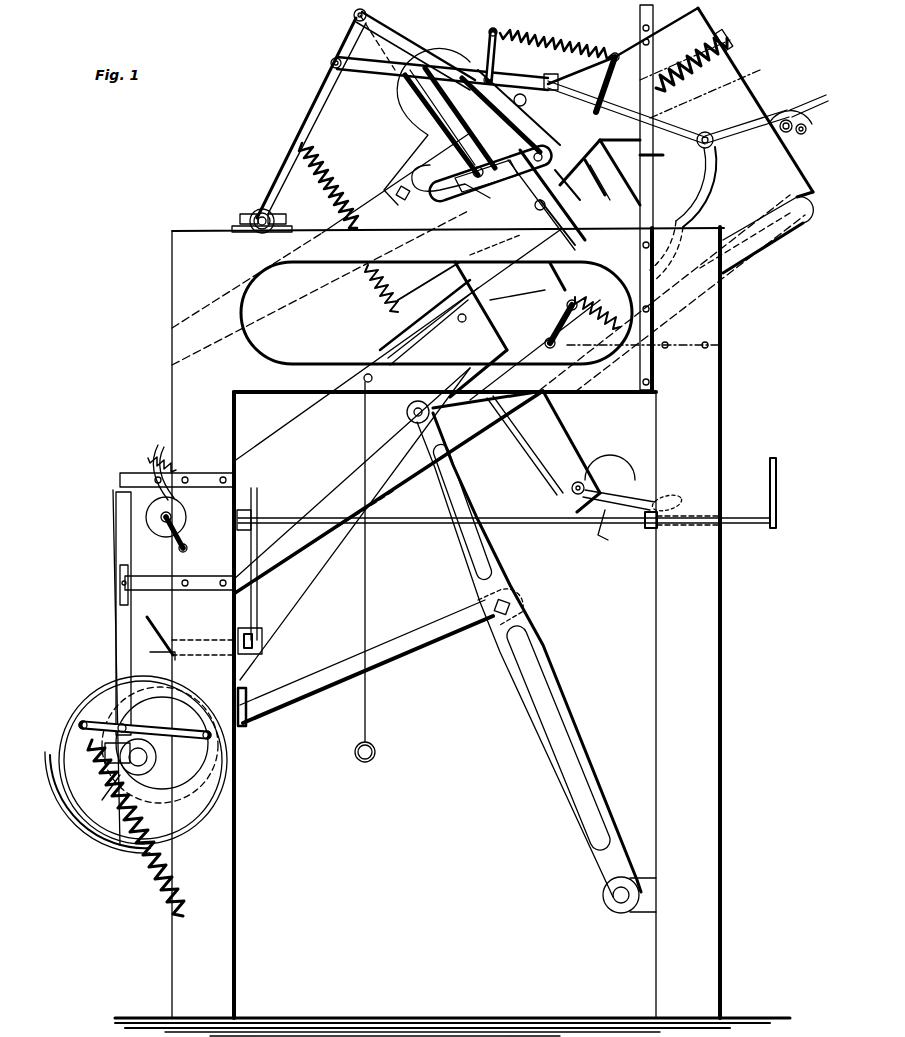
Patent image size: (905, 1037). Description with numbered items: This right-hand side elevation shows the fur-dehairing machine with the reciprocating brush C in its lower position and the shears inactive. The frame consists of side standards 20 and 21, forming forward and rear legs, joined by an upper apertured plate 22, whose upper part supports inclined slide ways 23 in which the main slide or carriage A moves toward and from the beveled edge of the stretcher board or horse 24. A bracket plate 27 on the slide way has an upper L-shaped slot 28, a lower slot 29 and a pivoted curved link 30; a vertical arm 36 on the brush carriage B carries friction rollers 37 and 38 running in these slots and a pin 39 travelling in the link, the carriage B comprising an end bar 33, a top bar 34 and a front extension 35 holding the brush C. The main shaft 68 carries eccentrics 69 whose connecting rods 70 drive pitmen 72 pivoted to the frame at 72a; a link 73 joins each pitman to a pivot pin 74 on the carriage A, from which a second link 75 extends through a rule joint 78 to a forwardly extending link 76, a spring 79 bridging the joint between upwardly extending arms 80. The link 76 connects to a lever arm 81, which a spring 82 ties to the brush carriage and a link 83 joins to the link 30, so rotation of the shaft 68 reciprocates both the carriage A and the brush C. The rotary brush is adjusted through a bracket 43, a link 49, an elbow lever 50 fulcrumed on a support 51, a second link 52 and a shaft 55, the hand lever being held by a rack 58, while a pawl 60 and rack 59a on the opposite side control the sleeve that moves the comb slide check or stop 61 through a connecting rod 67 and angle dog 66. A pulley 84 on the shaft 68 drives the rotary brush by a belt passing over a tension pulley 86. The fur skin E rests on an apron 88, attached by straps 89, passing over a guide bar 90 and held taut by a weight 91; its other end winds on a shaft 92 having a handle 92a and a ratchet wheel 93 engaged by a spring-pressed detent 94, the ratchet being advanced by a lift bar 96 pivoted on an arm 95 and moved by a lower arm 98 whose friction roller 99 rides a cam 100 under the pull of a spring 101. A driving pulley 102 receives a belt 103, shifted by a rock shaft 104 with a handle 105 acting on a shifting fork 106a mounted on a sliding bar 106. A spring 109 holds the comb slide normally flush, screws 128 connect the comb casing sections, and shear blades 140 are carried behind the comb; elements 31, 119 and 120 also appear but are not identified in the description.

The standard 20 is at (423, 623).
The standard 21 is at (448, 622).
The upper apertured plate 22 is at (434, 314).
The slide way 23 is at (523, 438).
The stretcher board or horse 24 is at (495, 241).
The bracket plate 27 is at (437, 152).
The upper slot 28 is at (441, 125).
The lower slot 29 is at (460, 122).
The link 30 is at (451, 193).
The arm 31 is at (480, 180).
The forward upright end bar 33 is at (377, 290).
The top bar or plate 34 is at (537, 200).
The front extension 35 is at (342, 578).
The vertical arm 36 is at (529, 135).
The friction roller 37 is at (532, 216).
The friction roller 38 is at (501, 115).
The pin 39 is at (517, 108).
The bracket 43 is at (507, 329).
The link 49 is at (517, 300).
The lever 50 is at (457, 311).
The support 51 is at (503, 423).
The second link 52 is at (429, 340).
The shaft 55 is at (572, 480).
The rack 58 is at (619, 515).
The rack 59a is at (620, 462).
The pawl 60 is at (648, 528).
The comb slide check or stop 61 is at (425, 281).
The angle dog 66 is at (396, 183).
The connecting rod 67 is at (530, 466).
The main or driving shaft 68 is at (158, 758).
The eccentric 69 is at (160, 745).
The connecting rod 70 is at (330, 672).
The pitman 72 is at (556, 670).
The pitman pivot 72a is at (626, 904).
The link 73 is at (540, 330).
The pivot pin 74 is at (715, 145).
The second link 75 is at (680, 126).
The third link 76 is at (478, 74).
The rule joint 78 is at (552, 84).
The spring 79 is at (550, 40).
The upwardly extending arm 80 is at (494, 60).
The lever arm 81 is at (312, 120).
The spring 82 is at (295, 188).
The link 83 is at (385, 40).
The pulley 84 is at (102, 794).
The tension pulley 86 is at (582, 321).
The apron 88 is at (303, 413).
The strap 89 is at (378, 353).
The guide bar 90 is at (369, 384).
The weight 91 is at (376, 752).
The shaft 92 is at (178, 522).
The crank arm or handle 92a is at (195, 554).
The ratchet wheel 93 is at (178, 510).
The spring-pressed detent 94 is at (163, 455).
The arm 95 is at (165, 580).
The lift bar 96 is at (118, 630).
The lower arm 98 is at (145, 724).
The friction roller 99 is at (120, 724).
The cam 100 is at (105, 758).
The spring 101 is at (495, 174).
The driving pulley 102 is at (78, 705).
The belt 103 is at (170, 618).
The rock shaft 104 is at (530, 512).
The handle 105 is at (777, 470).
The sliding bar 106 is at (258, 632).
The shifting fork 106a is at (271, 575).
The spring 109 is at (700, 58).
The clevis 119 is at (790, 115).
The pin 120 is at (800, 130).
The screw 128 is at (606, 180).
The shear blade 140 is at (585, 250).
The main slide A is at (714, 102).
The brush carriage B is at (372, 264).
The reciprocating brush C is at (672, 293).
The fur skin E is at (382, 286).